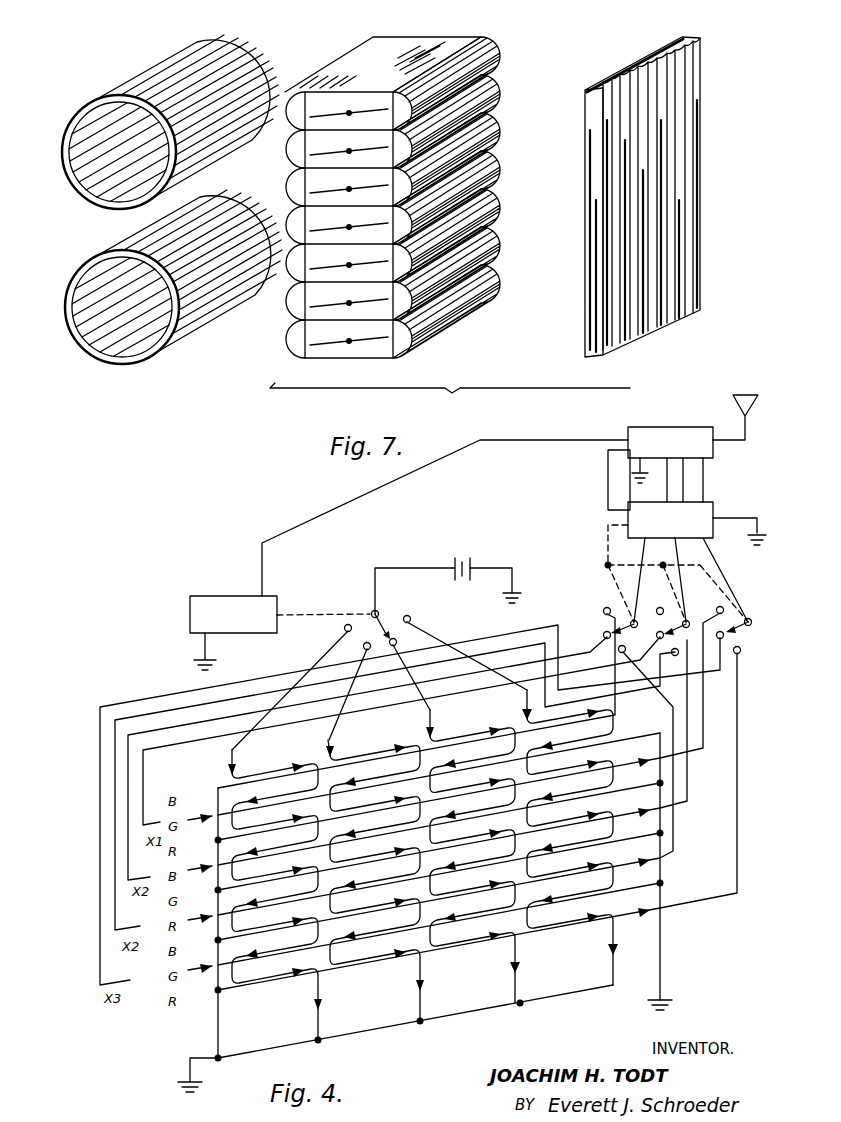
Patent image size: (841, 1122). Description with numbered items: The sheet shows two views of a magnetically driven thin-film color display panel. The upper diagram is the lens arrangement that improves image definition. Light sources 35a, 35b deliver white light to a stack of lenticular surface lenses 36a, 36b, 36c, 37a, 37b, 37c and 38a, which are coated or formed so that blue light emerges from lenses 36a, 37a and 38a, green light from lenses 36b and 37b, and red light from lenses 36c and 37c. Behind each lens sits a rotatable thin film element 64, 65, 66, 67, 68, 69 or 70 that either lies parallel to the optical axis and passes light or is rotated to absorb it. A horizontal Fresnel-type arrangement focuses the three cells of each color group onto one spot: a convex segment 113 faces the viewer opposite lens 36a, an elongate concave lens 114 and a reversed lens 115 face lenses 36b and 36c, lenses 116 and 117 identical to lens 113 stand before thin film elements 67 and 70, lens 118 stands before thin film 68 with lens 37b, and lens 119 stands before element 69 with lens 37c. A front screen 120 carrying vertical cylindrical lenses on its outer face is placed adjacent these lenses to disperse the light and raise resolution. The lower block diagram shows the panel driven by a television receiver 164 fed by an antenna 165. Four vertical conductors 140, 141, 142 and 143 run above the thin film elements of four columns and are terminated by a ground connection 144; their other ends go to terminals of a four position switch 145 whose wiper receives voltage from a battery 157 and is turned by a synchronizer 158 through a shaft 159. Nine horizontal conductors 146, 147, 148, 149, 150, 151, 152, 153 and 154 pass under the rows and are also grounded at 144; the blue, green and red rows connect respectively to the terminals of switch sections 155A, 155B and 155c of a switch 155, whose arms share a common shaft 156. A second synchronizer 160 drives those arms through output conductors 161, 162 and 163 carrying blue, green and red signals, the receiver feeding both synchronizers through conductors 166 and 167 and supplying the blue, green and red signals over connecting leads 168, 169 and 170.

In FIG. 7, the tubular light conductor 35a is at (128, 75).
In FIG. 7, the tubular light conductor 35b is at (115, 262).
In FIG. 7, the lenticular surface lens 36a is at (303, 92).
In FIG. 7, the lenticular surface lens 36b is at (286, 150).
In FIG. 7, the lenticular surface lens 36c is at (286, 190).
In FIG. 7, the lenticular surface lens 37a is at (286, 228).
In FIG. 7, the lenticular surface lens 37b is at (284, 272).
In FIG. 7, the lenticular surface lens 37c is at (284, 310).
In FIG. 7, the lenticular surface lens 38a is at (286, 346).
In FIG. 7, the thin film element 64 is at (320, 114).
In FIG. 7, the thin film element 65 is at (320, 152).
In FIG. 7, the thin film element 66 is at (320, 190).
In FIG. 7, the thin film element 67 is at (320, 228).
In FIG. 7, the thin film element 68 is at (320, 266).
In FIG. 7, the thin film element 69 is at (320, 304).
In FIG. 7, the thin film element 70 is at (320, 342).
In FIG. 7, the convex segment lens 113 is at (500, 57).
In FIG. 7, the elongate concave lens 114 is at (500, 94).
In FIG. 7, the elongate lens 115 is at (500, 132).
In FIG. 7, the lens 116 is at (500, 170).
In FIG. 7, the lens 117 is at (500, 284).
In FIG. 7, the lens 118 is at (500, 208).
In FIG. 7, the lens 119 is at (500, 246).
In FIG. 7, the front screen 120 is at (690, 36).
In FIG. 4, the vertical conductor 140 is at (240, 742).
In FIG. 4, the vertical conductor 141 is at (334, 738).
In FIG. 4, the vertical conductor 142 is at (432, 712).
In FIG. 4, the vertical conductor 143 is at (524, 710).
In FIG. 4, the ground connection 144 is at (170, 1098).
In FIG. 4, the four position switch 145 is at (424, 593).
In FIG. 4, the horizontal conductor 146 is at (224, 786).
In FIG. 4, the horizontal conductor 147 is at (220, 812).
In FIG. 4, the horizontal conductor 148 is at (216, 840).
In FIG. 4, the horizontal conductor 149 is at (220, 864).
In FIG. 4, the horizontal conductor 150 is at (216, 890).
In FIG. 4, the horizontal conductor 151 is at (220, 914).
In FIG. 4, the horizontal conductor 152 is at (216, 940).
In FIG. 4, the horizontal conductor 153 is at (220, 964).
In FIG. 4, the horizontal conductor 154 is at (216, 990).
In FIG. 4, the switch 155 is at (780, 609).
In FIG. 4, the switch section 155A is at (621, 615).
In FIG. 4, the switch section 155B is at (679, 637).
In FIG. 4, the switch section 155c is at (752, 630).
In FIG. 4, the common shaft 156 is at (608, 546).
In FIG. 4, the battery 157 is at (458, 558).
In FIG. 4, the synchronizer 158 is at (190, 613).
In FIG. 4, the shaft 159 is at (306, 612).
In FIG. 4, the synchronizer 160 is at (628, 520).
In FIG. 4, the output conductor 161 is at (660, 592).
In FIG. 4, the output conductor 162 is at (712, 592).
In FIG. 4, the output conductor 163 is at (712, 562).
In FIG. 4, the television receiver 164 is at (666, 427).
In FIG. 4, the antenna 165 is at (735, 395).
In FIG. 4, the conductor 166 is at (445, 518).
In FIG. 4, the conductor 167 is at (608, 496).
In FIG. 4, the connecting lead 168 is at (708, 468).
In FIG. 4, the connecting lead 169 is at (686, 484).
In FIG. 4, the connecting lead 170 is at (704, 491).